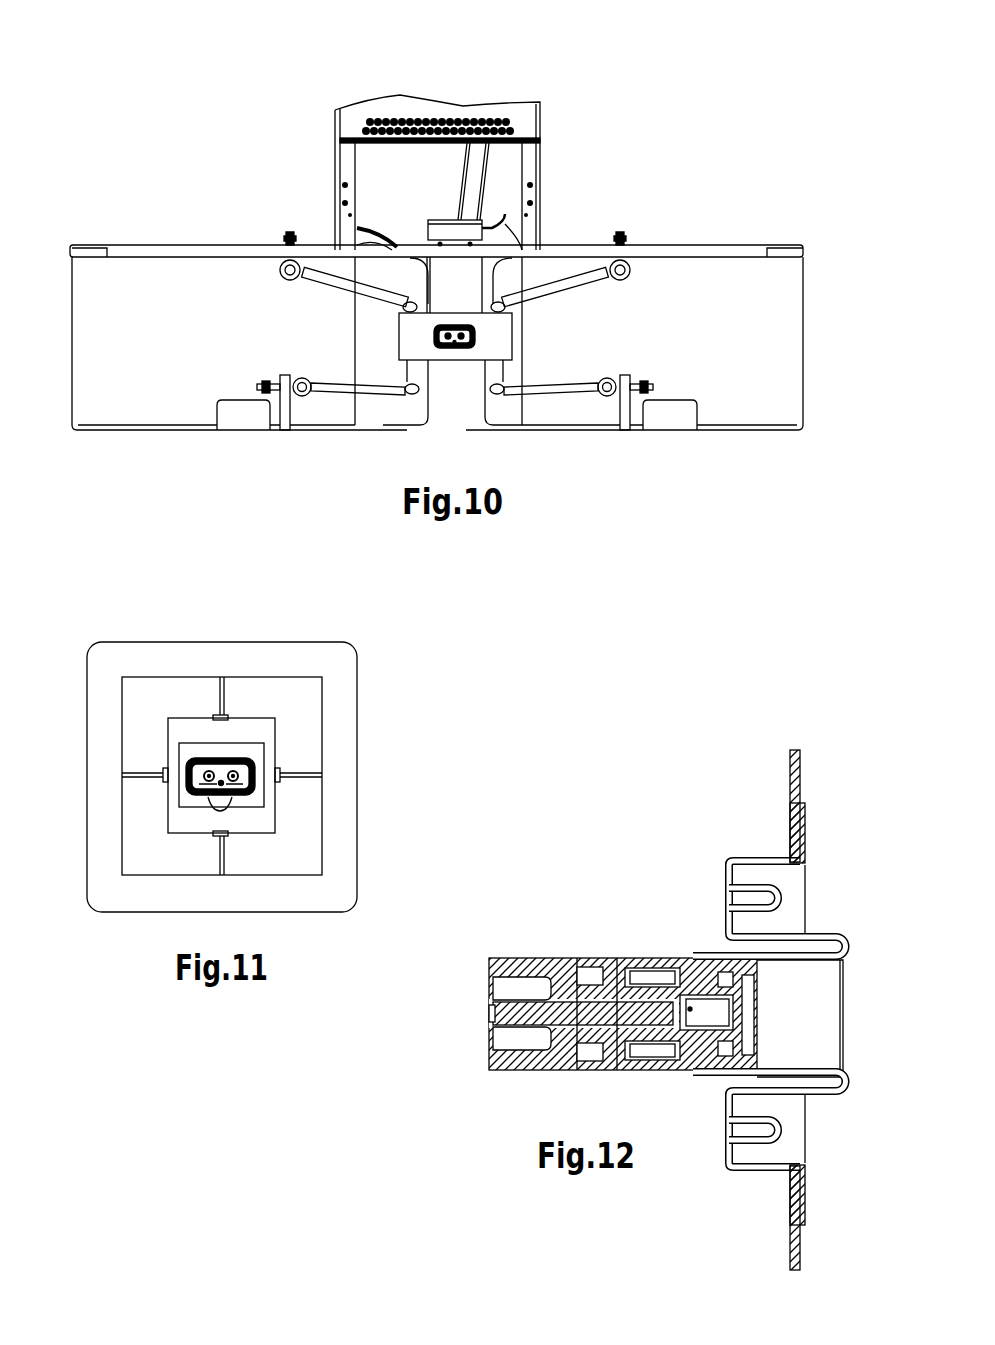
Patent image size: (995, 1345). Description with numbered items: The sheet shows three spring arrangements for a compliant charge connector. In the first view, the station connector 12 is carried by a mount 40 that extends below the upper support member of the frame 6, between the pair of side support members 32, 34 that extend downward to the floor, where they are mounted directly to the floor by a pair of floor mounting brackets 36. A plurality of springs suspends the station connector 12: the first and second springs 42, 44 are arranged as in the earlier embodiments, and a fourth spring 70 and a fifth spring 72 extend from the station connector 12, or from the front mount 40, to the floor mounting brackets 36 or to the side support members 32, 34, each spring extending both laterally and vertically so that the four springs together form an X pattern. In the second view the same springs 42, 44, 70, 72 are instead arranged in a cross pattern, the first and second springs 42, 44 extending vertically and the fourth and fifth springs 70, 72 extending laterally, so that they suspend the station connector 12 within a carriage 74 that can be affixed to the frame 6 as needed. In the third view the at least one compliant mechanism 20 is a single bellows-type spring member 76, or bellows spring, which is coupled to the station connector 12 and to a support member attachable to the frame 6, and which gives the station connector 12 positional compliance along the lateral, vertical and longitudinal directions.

In FIG. 10, the frame 6 is at (735, 220).
In FIG. 10, the station connector 12 is at (455, 347).
In FIG. 11, the station connector 12 is at (195, 797).
In FIG. 12, the station connector 12 is at (513, 1038).
In FIG. 12, the compliant mechanism 20 is at (752, 1172).
In FIG. 10, the side support member 32 is at (158, 380).
In FIG. 10, the side support member 34 is at (747, 383).
In FIG. 10, the floor mounting brackets 36 is at (303, 430).
In FIG. 10, the mount 40 is at (448, 335).
In FIG. 10, the first spring 42 is at (325, 277).
In FIG. 11, the first spring 42 is at (221, 693).
In FIG. 10, the second spring 44 is at (583, 288).
In FIG. 11, the second spring 44 is at (222, 857).
In FIG. 10, the fourth spring 70 is at (372, 390).
In FIG. 11, the fourth spring 70 is at (298, 777).
In FIG. 10, the fifth spring 72 is at (567, 392).
In FIG. 11, the fifth spring 72 is at (143, 775).
In FIG. 11, the carriage 74 is at (357, 697).
In FIG. 12, the bellows-type spring member 76 is at (769, 853).